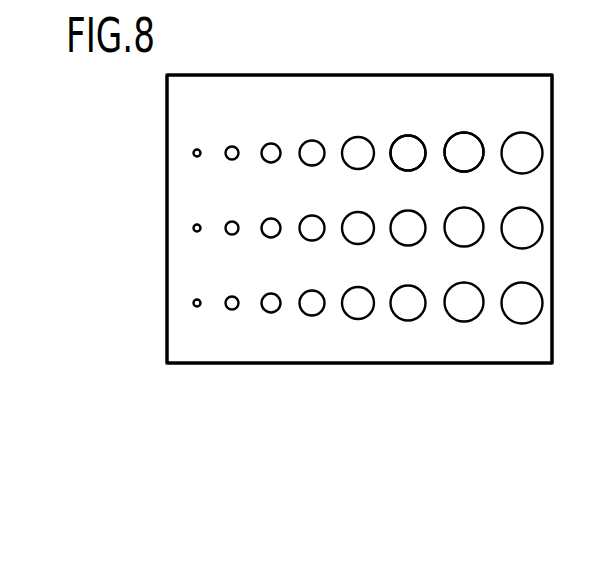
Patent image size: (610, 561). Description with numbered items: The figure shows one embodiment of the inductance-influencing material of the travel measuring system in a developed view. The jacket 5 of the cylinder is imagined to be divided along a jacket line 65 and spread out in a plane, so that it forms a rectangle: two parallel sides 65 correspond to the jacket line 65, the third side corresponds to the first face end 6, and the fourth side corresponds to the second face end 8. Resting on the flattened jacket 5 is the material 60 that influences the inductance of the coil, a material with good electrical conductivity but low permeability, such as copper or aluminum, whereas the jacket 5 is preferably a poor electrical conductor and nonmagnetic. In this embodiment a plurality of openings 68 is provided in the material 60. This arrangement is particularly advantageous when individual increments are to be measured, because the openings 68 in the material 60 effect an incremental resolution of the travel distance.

The jacket 5 is at (552, 127).
The first face end 6 is at (167, 240).
The second face end 8 is at (552, 282).
The material that influences the inductance 60 is at (237, 120).
The jacket line 65 is at (327, 42).
The openings 68 is at (467, 156).